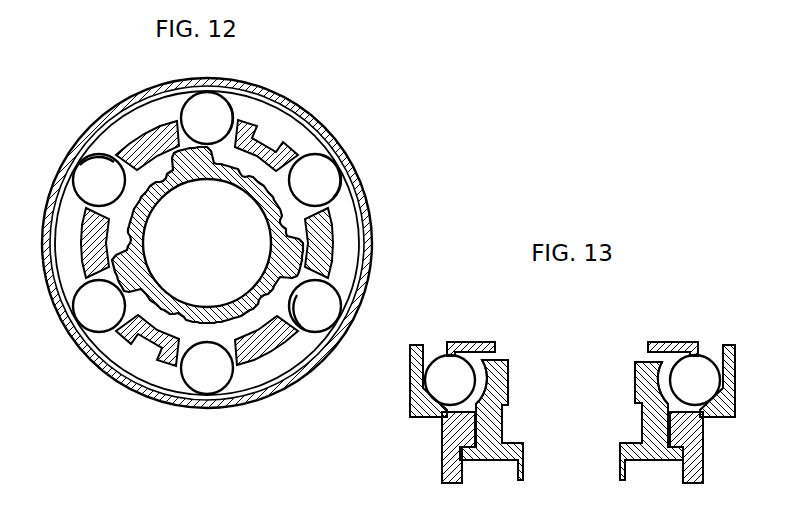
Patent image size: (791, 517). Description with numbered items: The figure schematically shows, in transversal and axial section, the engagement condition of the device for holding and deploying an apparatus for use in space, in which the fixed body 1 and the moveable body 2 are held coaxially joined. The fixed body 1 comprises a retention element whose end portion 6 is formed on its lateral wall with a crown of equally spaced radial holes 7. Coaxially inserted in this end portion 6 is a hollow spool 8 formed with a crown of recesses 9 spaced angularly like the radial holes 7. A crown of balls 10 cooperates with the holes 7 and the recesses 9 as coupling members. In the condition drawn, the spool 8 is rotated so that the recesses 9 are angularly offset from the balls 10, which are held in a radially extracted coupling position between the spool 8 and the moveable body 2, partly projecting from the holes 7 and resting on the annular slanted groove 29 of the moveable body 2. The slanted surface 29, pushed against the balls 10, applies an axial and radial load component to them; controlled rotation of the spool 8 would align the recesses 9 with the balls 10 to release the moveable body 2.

In FIG. 12, the fixed body 1 is at (292, 138).
In FIG. 12, the moveable body 2 is at (374, 250).
In FIG. 13, the moveable body 2 is at (737, 372).
In FIG. 12, the end portion 6 is at (284, 356).
In FIG. 13, the end portion 6 is at (440, 448).
In FIG. 12, the radial holes 7 is at (110, 165).
In FIG. 13, the radial holes 7 is at (472, 395).
In FIG. 12, the hollow spool 8 is at (180, 322).
In FIG. 13, the hollow spool 8 is at (632, 382).
In FIG. 12, the recesses 9 is at (240, 176).
In FIG. 12, the balls 10 is at (92, 175).
In FIG. 13, the balls 10 is at (445, 375).
In FIG. 12, the annular slanted groove 29 is at (255, 397).
In FIG. 13, the annular slanted groove 29 is at (706, 352).